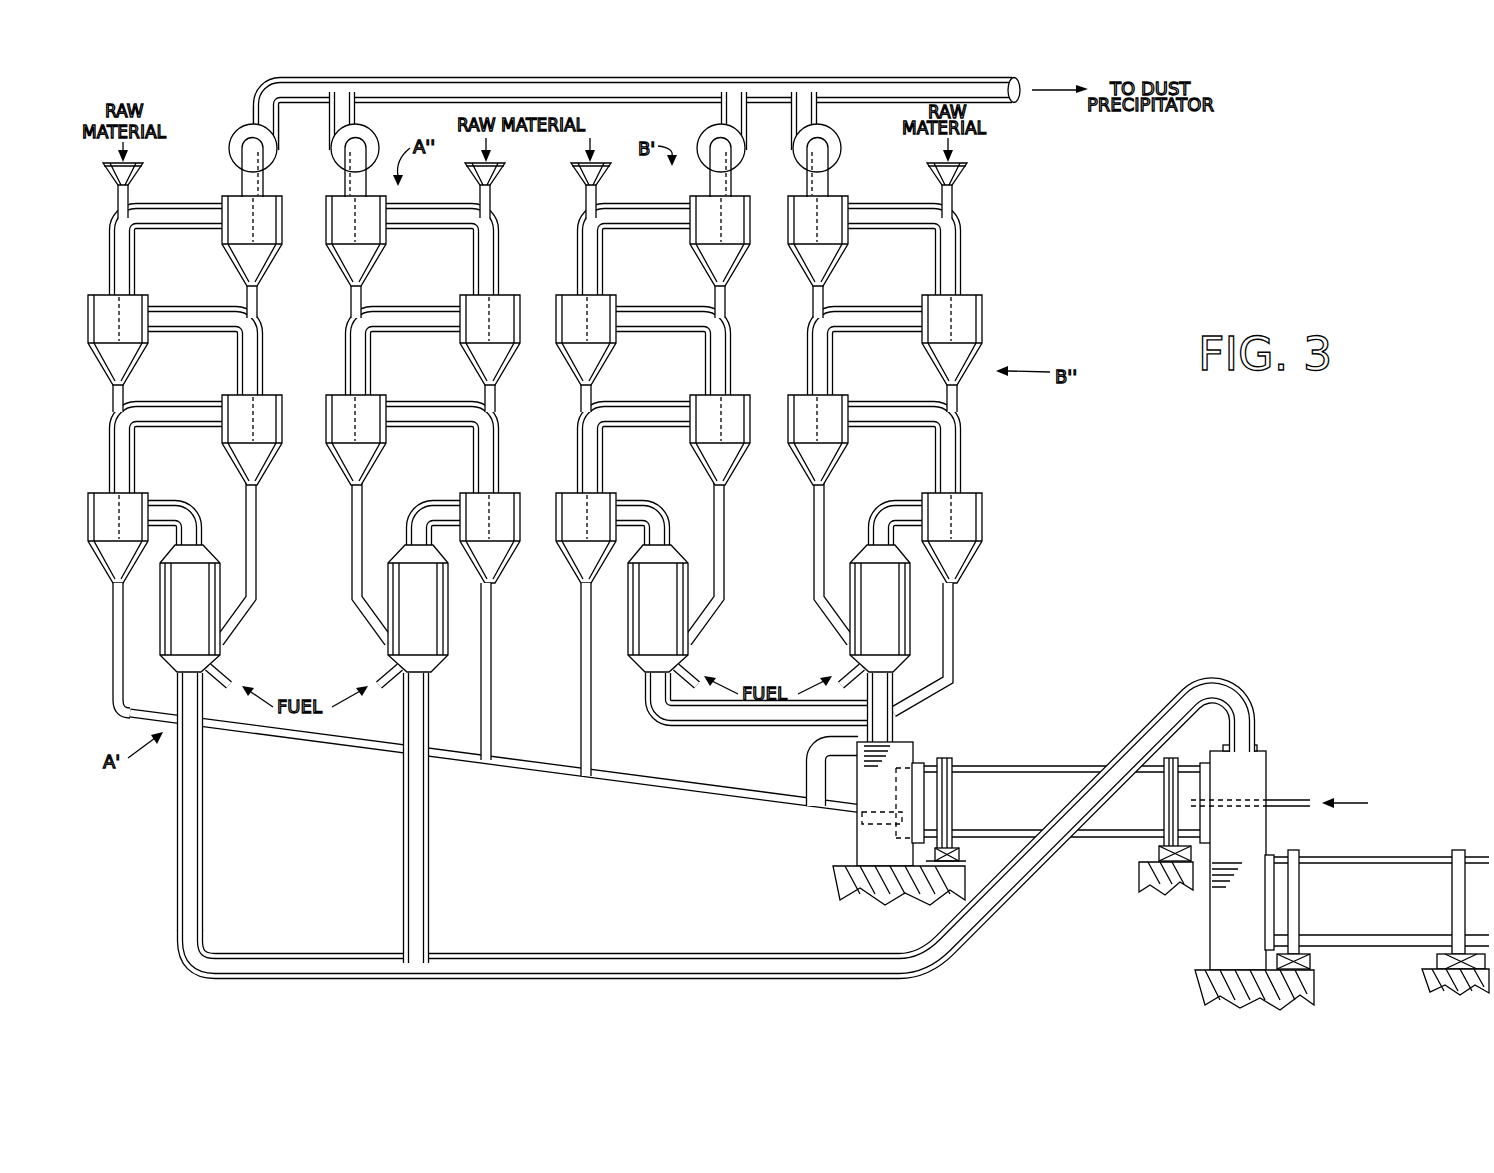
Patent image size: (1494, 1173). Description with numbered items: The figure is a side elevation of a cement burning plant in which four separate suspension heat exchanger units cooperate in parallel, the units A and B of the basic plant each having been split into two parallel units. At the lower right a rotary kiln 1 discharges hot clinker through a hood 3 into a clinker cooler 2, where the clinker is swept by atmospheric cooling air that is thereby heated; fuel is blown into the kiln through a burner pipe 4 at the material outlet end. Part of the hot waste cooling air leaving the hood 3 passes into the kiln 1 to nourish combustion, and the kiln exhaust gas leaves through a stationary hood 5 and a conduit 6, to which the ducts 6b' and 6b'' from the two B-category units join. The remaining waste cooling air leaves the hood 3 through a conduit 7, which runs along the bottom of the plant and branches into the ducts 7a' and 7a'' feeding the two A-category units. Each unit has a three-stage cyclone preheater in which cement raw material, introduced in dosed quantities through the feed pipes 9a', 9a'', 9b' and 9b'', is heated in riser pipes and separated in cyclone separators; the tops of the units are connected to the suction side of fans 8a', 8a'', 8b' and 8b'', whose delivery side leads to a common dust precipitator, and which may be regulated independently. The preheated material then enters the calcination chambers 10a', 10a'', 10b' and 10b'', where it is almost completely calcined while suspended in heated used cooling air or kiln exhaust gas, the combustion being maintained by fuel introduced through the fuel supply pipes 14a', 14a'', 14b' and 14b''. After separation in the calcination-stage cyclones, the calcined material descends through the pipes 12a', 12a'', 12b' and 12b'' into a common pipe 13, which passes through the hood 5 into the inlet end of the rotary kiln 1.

The rotary kiln 1 is at (1032, 768).
The clinker cooler 2 is at (1387, 940).
The hood 3 is at (1266, 768).
The burner pipe 4 is at (1296, 809).
The stationary hood 5 is at (868, 838).
The conduit 6 is at (898, 724).
The duct from calciner 10b' 6b' is at (768, 715).
The duct from calciner 10b'' 6b'' is at (913, 673).
The conduit 7 is at (1045, 870).
The hot air branch duct to calciner 10a' 7a' is at (225, 802).
The hot air branch duct to calciner 10a'' 7a'' is at (457, 818).
The fan 8a' is at (235, 146).
The fan 8a'' is at (334, 144).
The fan 8b' is at (743, 144).
The fan 8b'' is at (849, 144).
The feed pipe 9a' is at (147, 176).
The feed pipe 9a'' is at (461, 179).
The feed pipe 9b' is at (619, 179).
The feed pipe 9b'' is at (978, 174).
The calcination chamber 10a' is at (203, 588).
The calcination chamber 10a'' is at (407, 583).
The calcination chamber 10b' is at (668, 583).
The calcination chamber 10b'' is at (869, 583).
The pipe 12a' is at (106, 648).
The pipe 12a'' is at (523, 671).
The pipe 12b' is at (543, 679).
The pipe 12b'' is at (962, 647).
The common pipe 13 is at (670, 792).
The fuel supply pipe 14a' is at (247, 661).
The fuel supply pipe 14a'' is at (363, 661).
The fuel supply pipe 14b' is at (711, 662).
The fuel supply pipe 14b'' is at (826, 662).